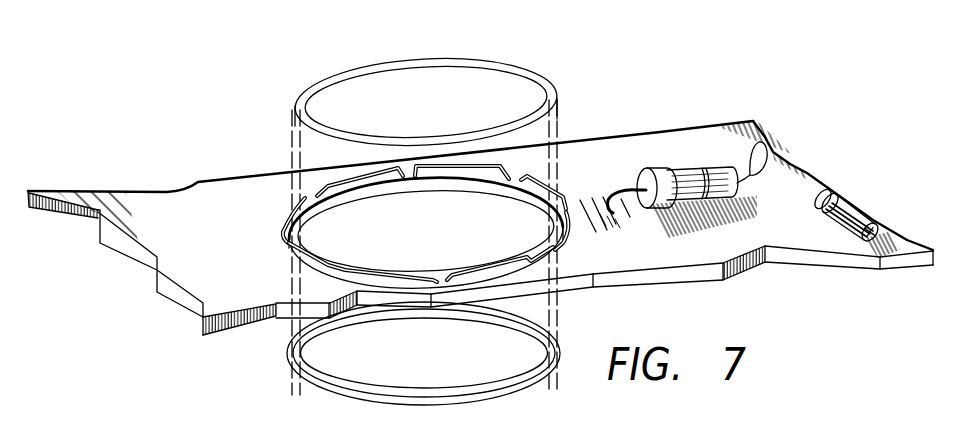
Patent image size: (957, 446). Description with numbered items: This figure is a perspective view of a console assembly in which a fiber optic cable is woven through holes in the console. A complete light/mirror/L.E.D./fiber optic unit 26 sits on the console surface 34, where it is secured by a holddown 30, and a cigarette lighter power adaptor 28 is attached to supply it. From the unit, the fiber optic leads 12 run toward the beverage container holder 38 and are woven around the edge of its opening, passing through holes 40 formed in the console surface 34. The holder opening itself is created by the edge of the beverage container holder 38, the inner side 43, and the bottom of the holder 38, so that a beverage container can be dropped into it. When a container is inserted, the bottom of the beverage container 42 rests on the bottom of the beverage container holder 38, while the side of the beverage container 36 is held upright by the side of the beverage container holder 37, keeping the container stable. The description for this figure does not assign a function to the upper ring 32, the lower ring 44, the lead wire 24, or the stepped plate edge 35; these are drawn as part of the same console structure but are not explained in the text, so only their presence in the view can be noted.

The fiber optic leads 12 is at (462, 245).
The lead wire 24 is at (785, 182).
The light/mirror/L.E.D./fiber optic unit 26 is at (682, 156).
The cigarette lighter power adaptor 28 is at (840, 206).
The holddown 30 is at (703, 172).
The upper ring 32 is at (418, 57).
The console surface 34 is at (206, 190).
The stepped plate edge 35 is at (131, 253).
The side of the beverage container 36 is at (293, 200).
The side of the beverage container holder 37 is at (443, 190).
The beverage container holder 38 is at (463, 237).
The holes 40 is at (562, 262).
The bottom of the beverage container 42 is at (387, 360).
The inner side 43 is at (291, 143).
The lower ring outer edge 44 is at (500, 406).